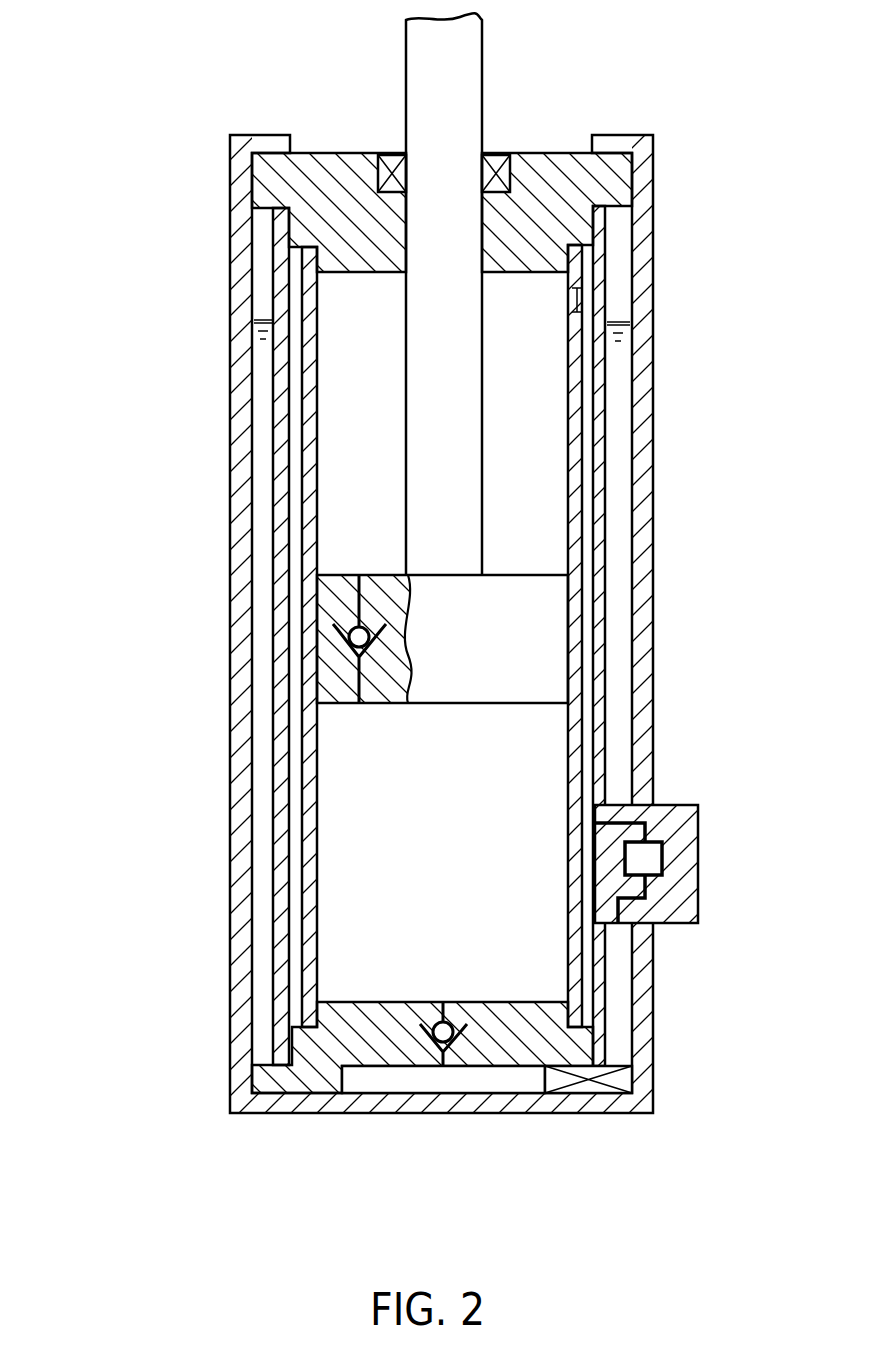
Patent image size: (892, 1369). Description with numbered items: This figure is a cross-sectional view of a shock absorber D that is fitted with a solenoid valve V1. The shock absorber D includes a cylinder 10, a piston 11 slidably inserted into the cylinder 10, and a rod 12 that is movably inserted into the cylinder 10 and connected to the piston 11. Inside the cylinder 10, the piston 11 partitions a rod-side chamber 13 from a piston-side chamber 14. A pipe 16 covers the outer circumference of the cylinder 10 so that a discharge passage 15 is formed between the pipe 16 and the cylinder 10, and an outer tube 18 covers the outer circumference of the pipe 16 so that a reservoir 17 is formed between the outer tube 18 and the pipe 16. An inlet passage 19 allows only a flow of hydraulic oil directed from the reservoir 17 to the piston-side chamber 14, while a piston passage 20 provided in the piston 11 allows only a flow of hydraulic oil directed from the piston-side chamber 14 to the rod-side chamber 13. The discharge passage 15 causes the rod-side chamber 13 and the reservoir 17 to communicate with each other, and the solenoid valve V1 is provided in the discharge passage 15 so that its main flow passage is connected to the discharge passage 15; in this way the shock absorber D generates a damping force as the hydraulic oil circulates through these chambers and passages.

The shock absorber D is at (220, 125).
The cylinder 10 is at (310, 482).
The piston 11 is at (530, 642).
The rod 12 is at (465, 70).
The rod-side chamber 13 is at (376, 430).
The piston-side chamber 14 is at (413, 862).
The discharge passage 15 is at (586, 470).
The pipe 16 is at (603, 392).
The reservoir 17 is at (265, 267).
The outer tube 18 is at (645, 272).
The inlet passage 19 is at (430, 1060).
The piston passage 20 is at (358, 676).
The solenoid valve V1 is at (664, 834).